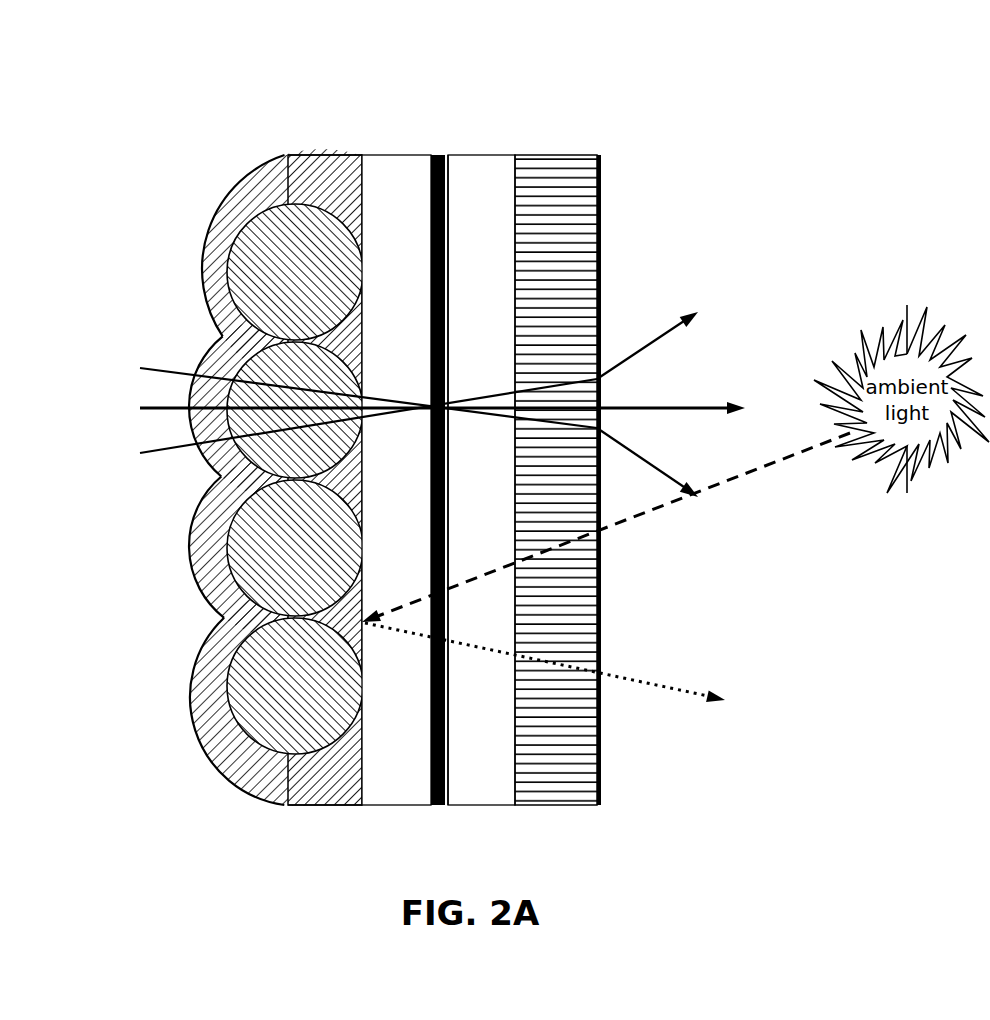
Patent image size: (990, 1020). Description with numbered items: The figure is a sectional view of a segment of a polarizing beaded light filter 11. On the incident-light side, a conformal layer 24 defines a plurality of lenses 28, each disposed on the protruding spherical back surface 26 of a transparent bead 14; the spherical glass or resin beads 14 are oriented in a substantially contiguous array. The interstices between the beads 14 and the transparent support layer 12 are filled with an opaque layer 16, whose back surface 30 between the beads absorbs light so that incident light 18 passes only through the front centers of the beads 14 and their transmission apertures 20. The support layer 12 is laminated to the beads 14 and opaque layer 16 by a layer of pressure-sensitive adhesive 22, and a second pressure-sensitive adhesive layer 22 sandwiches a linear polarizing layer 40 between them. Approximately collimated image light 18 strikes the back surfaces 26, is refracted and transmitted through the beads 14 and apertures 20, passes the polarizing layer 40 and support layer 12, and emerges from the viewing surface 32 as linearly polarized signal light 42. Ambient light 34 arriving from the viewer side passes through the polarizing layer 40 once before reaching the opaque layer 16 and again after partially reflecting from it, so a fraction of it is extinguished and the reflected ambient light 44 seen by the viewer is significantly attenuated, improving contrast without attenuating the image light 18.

The polarizing beaded light filter 11 is at (433, 445).
The transparent support layer 12 is at (555, 155).
The beads 14 is at (290, 233).
The opaque layer 16 is at (330, 153).
The incident light 18 is at (329, 412).
The transmission apertures 20 is at (363, 272).
The pressure-sensitive adhesive layer 22 is at (495, 155).
The conformal layer 24 is at (227, 193).
The back surface of bead 26 is at (229, 678).
The lens 28 is at (223, 242).
The back surface of opaque binder layer 30 is at (230, 613).
The viewing surface 32 is at (601, 156).
The ambient light 34 is at (790, 453).
The linear polarizing layer 40 is at (437, 805).
The signal light 42 is at (683, 408).
The reflected ambient light 44 is at (670, 687).